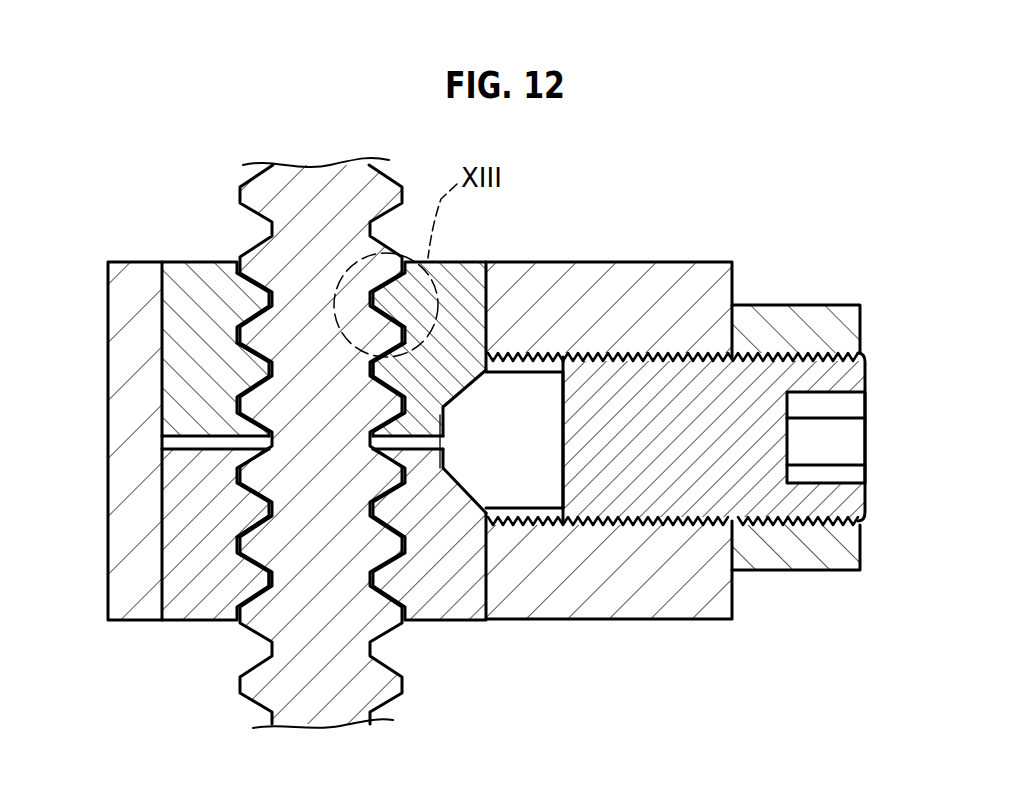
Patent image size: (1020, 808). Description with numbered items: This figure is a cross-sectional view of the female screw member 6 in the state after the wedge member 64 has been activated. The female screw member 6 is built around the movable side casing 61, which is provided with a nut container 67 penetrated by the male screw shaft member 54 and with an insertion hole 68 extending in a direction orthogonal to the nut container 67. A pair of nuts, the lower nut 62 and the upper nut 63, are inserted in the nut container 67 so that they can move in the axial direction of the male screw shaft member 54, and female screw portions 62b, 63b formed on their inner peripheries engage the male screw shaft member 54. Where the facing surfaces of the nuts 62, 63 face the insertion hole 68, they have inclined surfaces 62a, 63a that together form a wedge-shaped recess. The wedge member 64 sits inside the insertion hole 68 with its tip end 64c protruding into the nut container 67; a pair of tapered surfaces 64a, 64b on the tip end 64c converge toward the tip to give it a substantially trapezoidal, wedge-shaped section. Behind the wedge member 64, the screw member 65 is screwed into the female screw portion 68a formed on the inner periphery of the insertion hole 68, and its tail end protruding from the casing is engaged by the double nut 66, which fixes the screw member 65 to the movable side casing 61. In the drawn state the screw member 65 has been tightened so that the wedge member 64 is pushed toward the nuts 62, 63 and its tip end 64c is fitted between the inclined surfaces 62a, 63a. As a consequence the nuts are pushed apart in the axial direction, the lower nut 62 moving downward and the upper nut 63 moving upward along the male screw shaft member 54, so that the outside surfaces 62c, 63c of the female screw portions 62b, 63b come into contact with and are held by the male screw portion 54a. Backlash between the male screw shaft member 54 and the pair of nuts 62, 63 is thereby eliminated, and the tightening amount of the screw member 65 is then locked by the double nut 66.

The female screw member 6 is at (697, 215).
The male screw shaft member 54 is at (293, 180).
The male screw portion 54a is at (240, 481).
The movable side casing 61 is at (635, 275).
The lower nut 62 is at (268, 577).
The inclined surface 62a is at (443, 490).
The female screw portion 62b is at (243, 577).
The outside surface 62c is at (245, 522).
The upper nut 63 is at (157, 315).
The inclined surface 63a is at (452, 360).
The female screw portion 63b is at (232, 293).
The outside surface 63c is at (240, 358).
The wedge member 64 is at (492, 447).
The tapered surface 64a is at (487, 490).
The tapered surface 64b is at (482, 392).
The tip end 64c is at (473, 457).
The screw member 65 is at (852, 377).
The double nut 66 is at (837, 553).
The nut container 67 is at (174, 480).
The insertion hole 68 is at (542, 355).
The female screw portion 68a is at (713, 520).